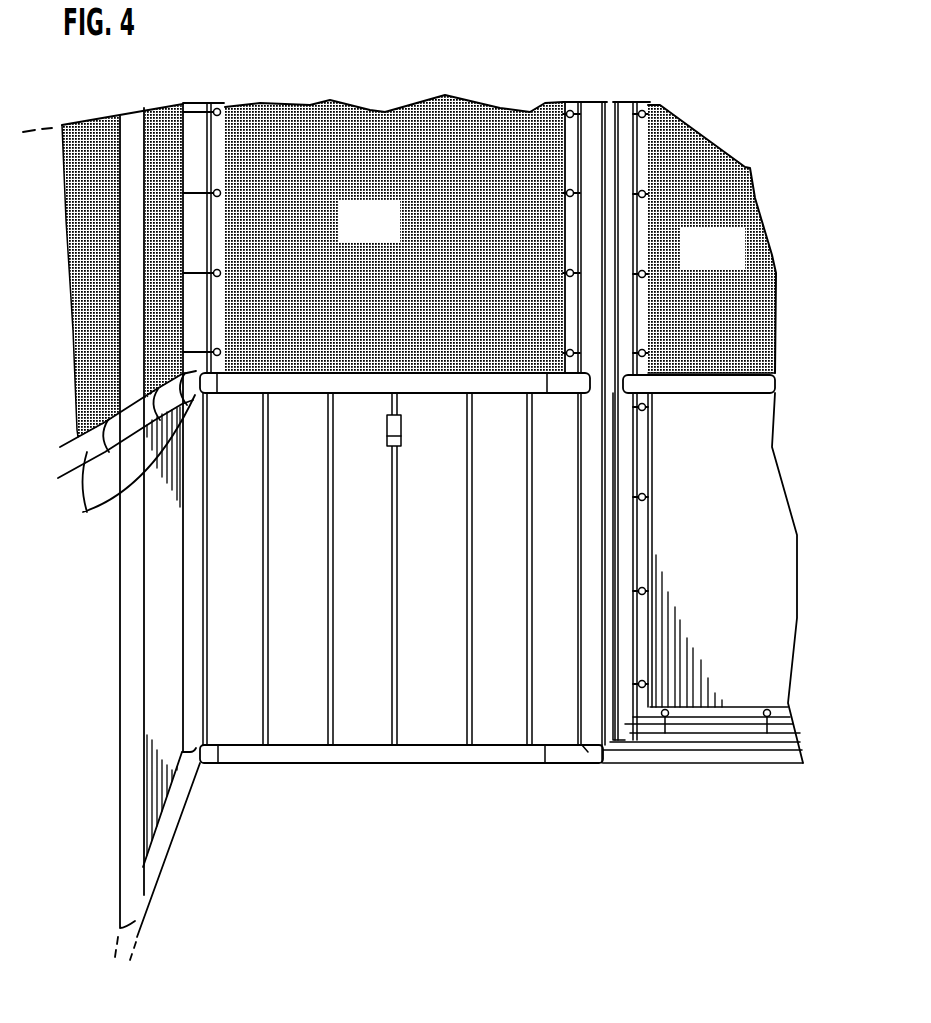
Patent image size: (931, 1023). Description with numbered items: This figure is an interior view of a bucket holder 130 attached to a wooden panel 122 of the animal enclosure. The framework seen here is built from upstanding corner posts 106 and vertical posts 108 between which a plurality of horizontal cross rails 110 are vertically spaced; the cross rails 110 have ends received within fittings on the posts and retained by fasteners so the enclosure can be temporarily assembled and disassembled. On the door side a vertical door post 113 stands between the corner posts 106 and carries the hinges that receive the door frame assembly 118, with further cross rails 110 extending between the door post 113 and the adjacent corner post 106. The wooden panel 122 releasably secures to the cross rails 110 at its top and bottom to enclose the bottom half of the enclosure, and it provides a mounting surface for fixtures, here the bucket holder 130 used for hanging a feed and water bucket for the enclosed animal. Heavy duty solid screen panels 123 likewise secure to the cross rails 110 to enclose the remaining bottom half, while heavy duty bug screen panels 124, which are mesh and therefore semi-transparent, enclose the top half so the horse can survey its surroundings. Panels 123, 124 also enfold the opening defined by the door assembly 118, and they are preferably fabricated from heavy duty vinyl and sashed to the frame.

The upstanding corner post 106 is at (193, 150).
The vertical post 108 is at (132, 142).
The horizontal cross rail 110 is at (197, 867).
The vertical door post 113 is at (591, 110).
The door frame assembly 118 is at (754, 396).
The wooden panel 122 is at (447, 579).
The solid screen panel 123 is at (733, 533).
The bug screen panel 124 is at (163, 140).
The bucket holder 130 is at (398, 447).